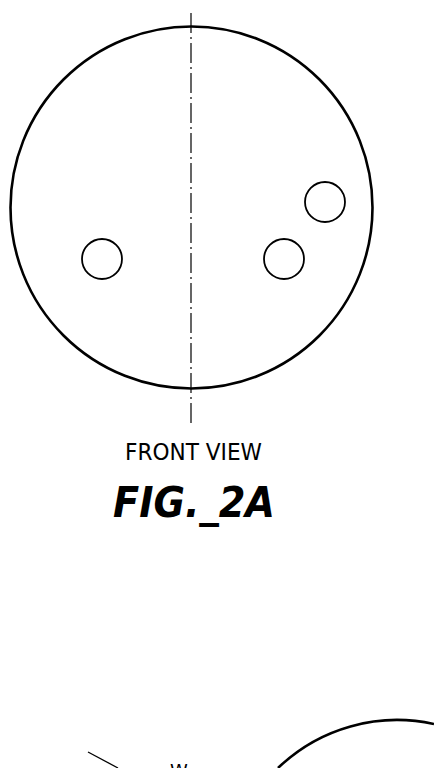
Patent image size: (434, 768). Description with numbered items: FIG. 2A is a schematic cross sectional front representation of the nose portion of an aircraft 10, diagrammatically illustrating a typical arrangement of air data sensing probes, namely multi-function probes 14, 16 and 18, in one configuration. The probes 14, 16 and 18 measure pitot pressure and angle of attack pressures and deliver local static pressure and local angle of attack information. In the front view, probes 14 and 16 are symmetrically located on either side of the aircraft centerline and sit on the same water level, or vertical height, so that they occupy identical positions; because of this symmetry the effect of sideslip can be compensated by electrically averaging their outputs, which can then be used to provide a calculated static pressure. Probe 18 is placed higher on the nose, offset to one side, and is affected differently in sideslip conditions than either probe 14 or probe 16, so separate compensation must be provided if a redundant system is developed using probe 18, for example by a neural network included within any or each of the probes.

The aircraft 10 is at (312, 347).
The multi-function probe 14 is at (283, 279).
The multi-function probe 16 is at (100, 278).
The multi-function probe 18 is at (323, 183).